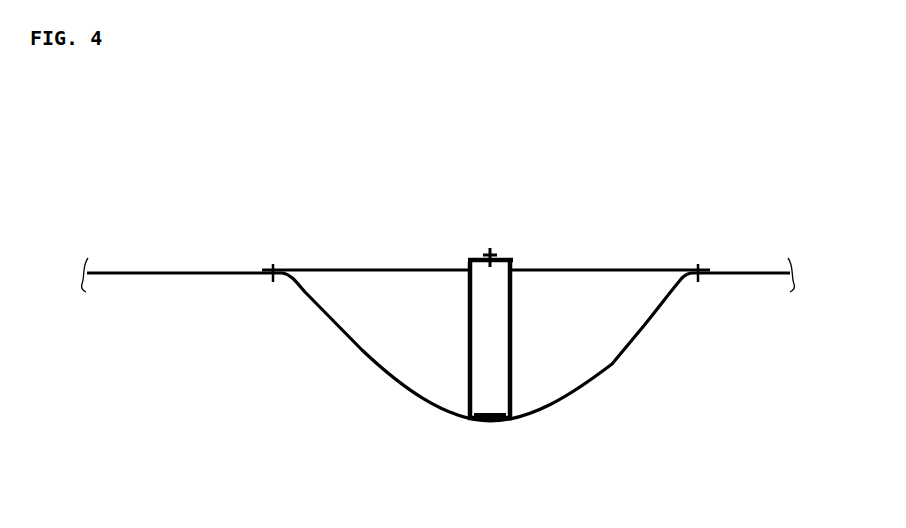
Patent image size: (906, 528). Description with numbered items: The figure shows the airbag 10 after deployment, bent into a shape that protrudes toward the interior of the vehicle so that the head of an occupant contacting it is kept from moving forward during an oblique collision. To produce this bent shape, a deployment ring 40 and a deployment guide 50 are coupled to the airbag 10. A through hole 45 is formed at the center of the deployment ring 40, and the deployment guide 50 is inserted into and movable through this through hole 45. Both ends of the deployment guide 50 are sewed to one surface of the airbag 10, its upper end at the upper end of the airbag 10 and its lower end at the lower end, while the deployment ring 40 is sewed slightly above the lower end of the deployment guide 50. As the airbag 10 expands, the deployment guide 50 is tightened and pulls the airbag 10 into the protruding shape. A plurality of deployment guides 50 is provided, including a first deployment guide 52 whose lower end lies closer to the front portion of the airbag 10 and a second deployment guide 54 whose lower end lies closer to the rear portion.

The airbag 10 is at (617, 362).
The deployment ring 40 is at (467, 333).
The through hole 45 is at (487, 350).
The deployment guide 50 is at (486, 197).
The first deployment guide 52 is at (413, 268).
The second deployment guide 54 is at (610, 227).